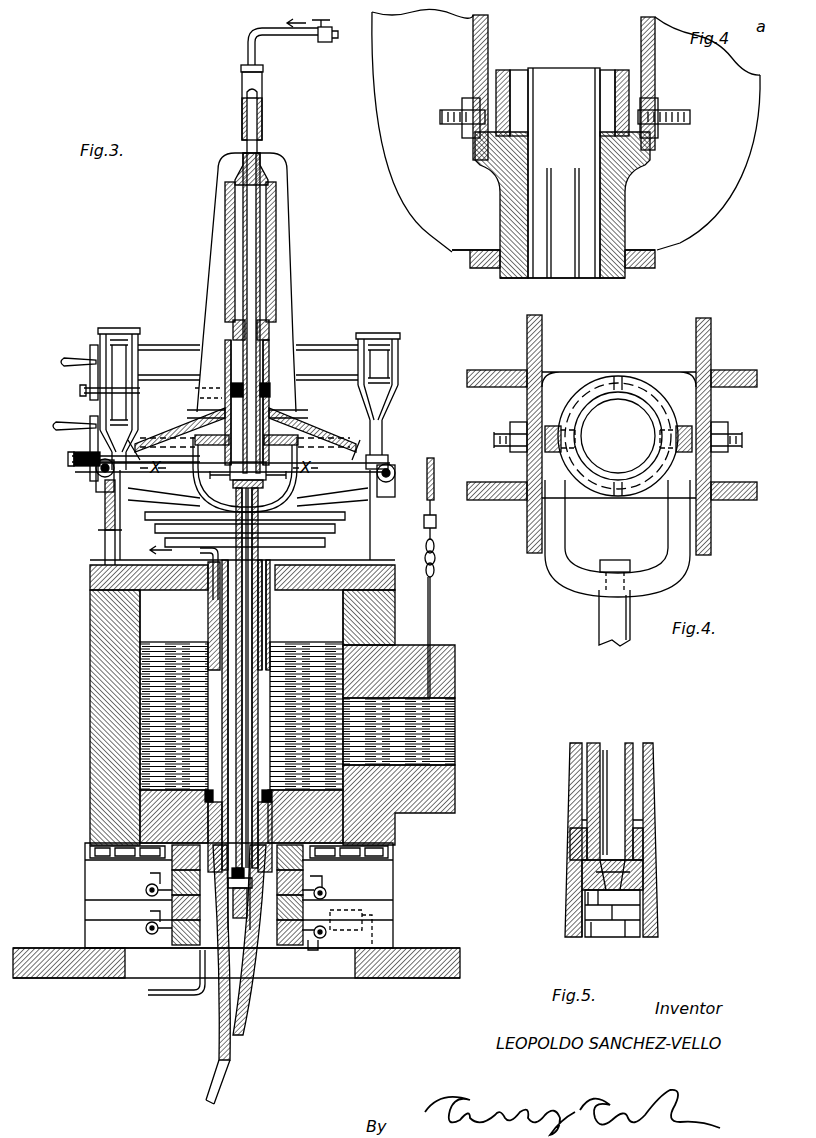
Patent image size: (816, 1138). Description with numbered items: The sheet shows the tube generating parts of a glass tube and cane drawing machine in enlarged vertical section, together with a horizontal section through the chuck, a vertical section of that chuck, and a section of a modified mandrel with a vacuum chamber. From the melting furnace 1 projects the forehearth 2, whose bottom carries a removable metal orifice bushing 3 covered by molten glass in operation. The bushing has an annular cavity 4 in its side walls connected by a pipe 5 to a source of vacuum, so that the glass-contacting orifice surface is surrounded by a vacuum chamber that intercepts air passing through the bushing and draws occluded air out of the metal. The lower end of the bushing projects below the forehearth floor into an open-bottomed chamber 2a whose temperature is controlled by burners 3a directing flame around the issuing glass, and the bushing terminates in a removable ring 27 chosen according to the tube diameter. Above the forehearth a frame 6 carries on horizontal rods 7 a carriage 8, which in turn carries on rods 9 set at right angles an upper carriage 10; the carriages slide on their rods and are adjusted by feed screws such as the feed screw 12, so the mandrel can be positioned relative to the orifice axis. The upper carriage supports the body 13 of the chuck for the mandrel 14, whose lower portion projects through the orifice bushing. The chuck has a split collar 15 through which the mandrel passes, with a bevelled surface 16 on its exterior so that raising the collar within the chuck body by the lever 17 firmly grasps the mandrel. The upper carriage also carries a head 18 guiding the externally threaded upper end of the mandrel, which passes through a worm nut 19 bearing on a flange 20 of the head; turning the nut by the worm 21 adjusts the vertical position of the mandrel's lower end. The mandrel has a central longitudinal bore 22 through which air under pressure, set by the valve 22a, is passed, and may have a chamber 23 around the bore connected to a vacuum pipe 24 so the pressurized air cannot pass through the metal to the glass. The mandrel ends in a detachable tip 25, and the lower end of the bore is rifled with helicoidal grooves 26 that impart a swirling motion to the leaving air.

In FIG. 3, the melting furnace 1 is at (268, 345).
In FIG. 3, the forehearth 2 is at (252, 705).
In FIG. 3, the chamber 2a is at (262, 940).
In FIG. 3, the orifice bushing 3 is at (212, 792).
In FIG. 3, the burners 3a is at (338, 886).
In FIG. 3, the annular cavity 4 is at (276, 794).
In FIG. 3, the pipe 5 is at (166, 988).
In FIG. 3, the frame 6 is at (108, 543).
In FIG. 3, the horizontal rods 7 is at (96, 478).
In FIG. 3, the carriage 8 is at (385, 450).
In FIG. 3, the rods 9 is at (306, 455).
In FIG. 3, the upper carriage 10 is at (248, 378).
In FIG. 3, the feed screw 12 is at (80, 437).
In FIG. 3, the chuck body 13 is at (268, 498).
In FIG. 4A, the chuck body 13 is at (652, 266).
In FIG. 3, the mandrel 14 is at (250, 522).
In FIG. 4A, the split collar 15 is at (536, 268).
In FIG. 4A, the bevelled surface 16 is at (502, 276).
In FIG. 4A, the lever 17 is at (478, 148).
In FIG. 4, the lever 17 is at (568, 572).
In FIG. 3, the head 18 is at (283, 257).
In FIG. 4A, the head 18 is at (447, 41).
In FIG. 3, the worm nut 19 is at (266, 428).
In FIG. 3, the flange 20 is at (266, 400).
In FIG. 3, the worm 21 is at (232, 385).
In FIG. 3, the central longitudinal bore 22 is at (262, 624).
In FIG. 5, the central longitudinal bore 22 is at (615, 838).
In FIG. 3, the valve 22a is at (325, 43).
In FIG. 3, the chamber 23 is at (224, 624).
In FIG. 3, the vacuum pipe 24 is at (189, 609).
In FIG. 3, the detachable tip 25 is at (234, 925).
In FIG. 5, the detachable tip 25 is at (650, 930).
In FIG. 5, the helicoidal grooves 26 is at (642, 868).
In FIG. 3, the removable ring 27 is at (276, 935).